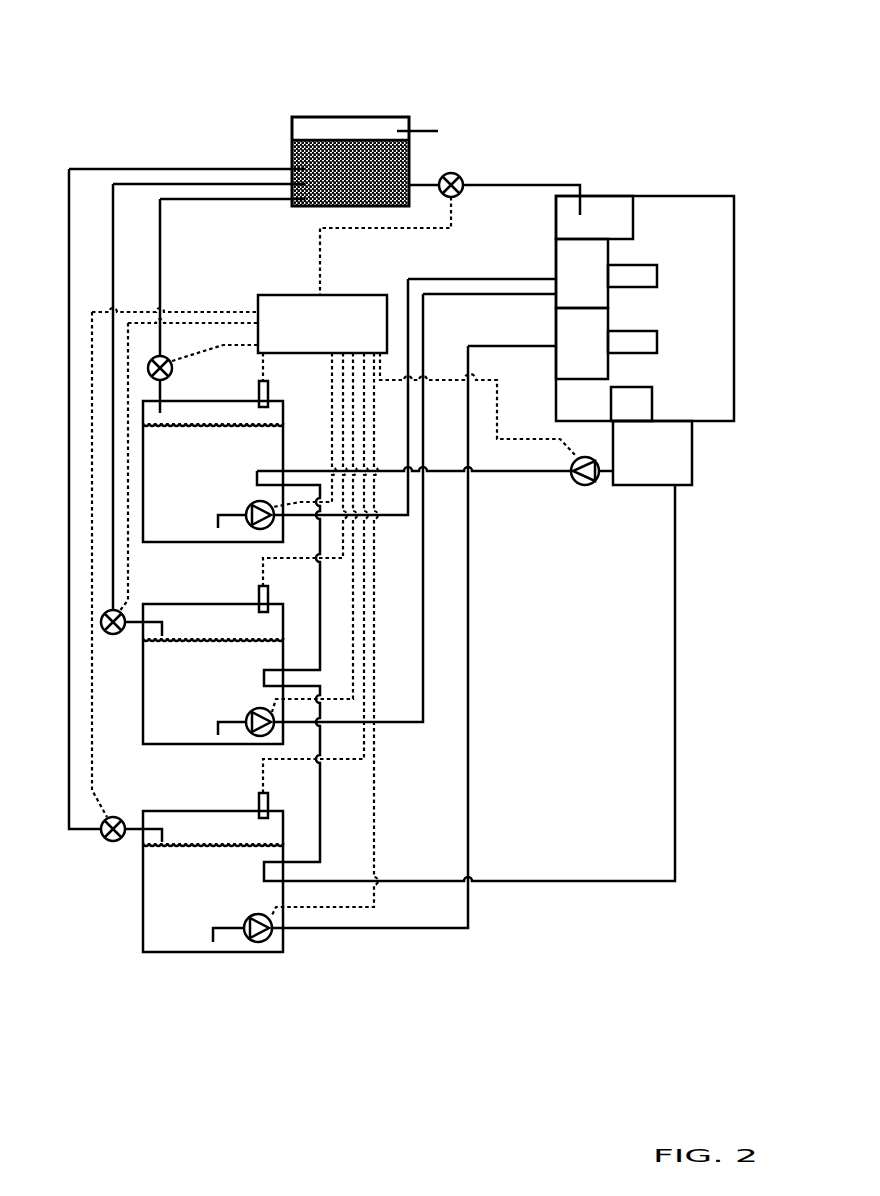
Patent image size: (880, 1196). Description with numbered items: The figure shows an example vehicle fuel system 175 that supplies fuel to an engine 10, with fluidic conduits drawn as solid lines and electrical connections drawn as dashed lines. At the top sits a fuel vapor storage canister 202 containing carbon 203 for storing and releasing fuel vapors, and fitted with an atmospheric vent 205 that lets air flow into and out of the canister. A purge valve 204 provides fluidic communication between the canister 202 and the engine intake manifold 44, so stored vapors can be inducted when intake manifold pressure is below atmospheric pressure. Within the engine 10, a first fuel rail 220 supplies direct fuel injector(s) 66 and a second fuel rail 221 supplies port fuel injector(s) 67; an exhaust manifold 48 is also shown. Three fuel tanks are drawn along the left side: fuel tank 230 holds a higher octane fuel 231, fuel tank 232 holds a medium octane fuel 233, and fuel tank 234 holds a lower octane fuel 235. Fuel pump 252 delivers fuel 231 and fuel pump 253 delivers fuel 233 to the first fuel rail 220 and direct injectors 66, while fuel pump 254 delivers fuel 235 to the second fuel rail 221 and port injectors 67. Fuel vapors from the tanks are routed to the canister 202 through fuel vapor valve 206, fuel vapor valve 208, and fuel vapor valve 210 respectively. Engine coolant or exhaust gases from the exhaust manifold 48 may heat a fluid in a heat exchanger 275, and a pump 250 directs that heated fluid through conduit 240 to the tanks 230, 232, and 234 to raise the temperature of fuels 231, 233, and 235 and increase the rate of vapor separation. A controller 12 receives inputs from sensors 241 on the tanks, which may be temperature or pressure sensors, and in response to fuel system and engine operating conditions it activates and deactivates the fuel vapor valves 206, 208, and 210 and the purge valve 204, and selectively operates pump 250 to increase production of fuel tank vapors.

The fuel system 175 is at (98, 38).
The fuel vapor storage canister 202 is at (291, 117).
The carbon 203 is at (366, 182).
The atmospheric vent 205 is at (420, 131).
The purge valve 204 is at (448, 173).
The engine 10 is at (735, 263).
The intake manifold 44 is at (594, 217).
The first fuel rail 220 is at (582, 273).
The second fuel rail 221 is at (582, 343).
The direct fuel injector 66 is at (632, 276).
The port fuel injector 67 is at (632, 343).
The exhaust manifold 48 is at (631, 404).
The heat exchanger 275 is at (652, 453).
The pump 250 is at (576, 482).
The conduit 240 is at (497, 473).
The controller 12 is at (322, 324).
The fuel vapor valve 206 is at (168, 358).
The fuel vapor valve 208 is at (107, 634).
The fuel vapor valve 210 is at (109, 841).
The sensors 241 is at (257, 397).
The fuel tank 230 is at (166, 401).
The fuel 231 is at (235, 466).
The fuel pump 252 is at (253, 504).
The fuel tank 232 is at (146, 604).
The fuel 233 is at (235, 671).
The fuel pump 253 is at (253, 711).
The fuel tank 234 is at (145, 811).
The fuel 235 is at (235, 879).
The fuel pump 254 is at (250, 917).